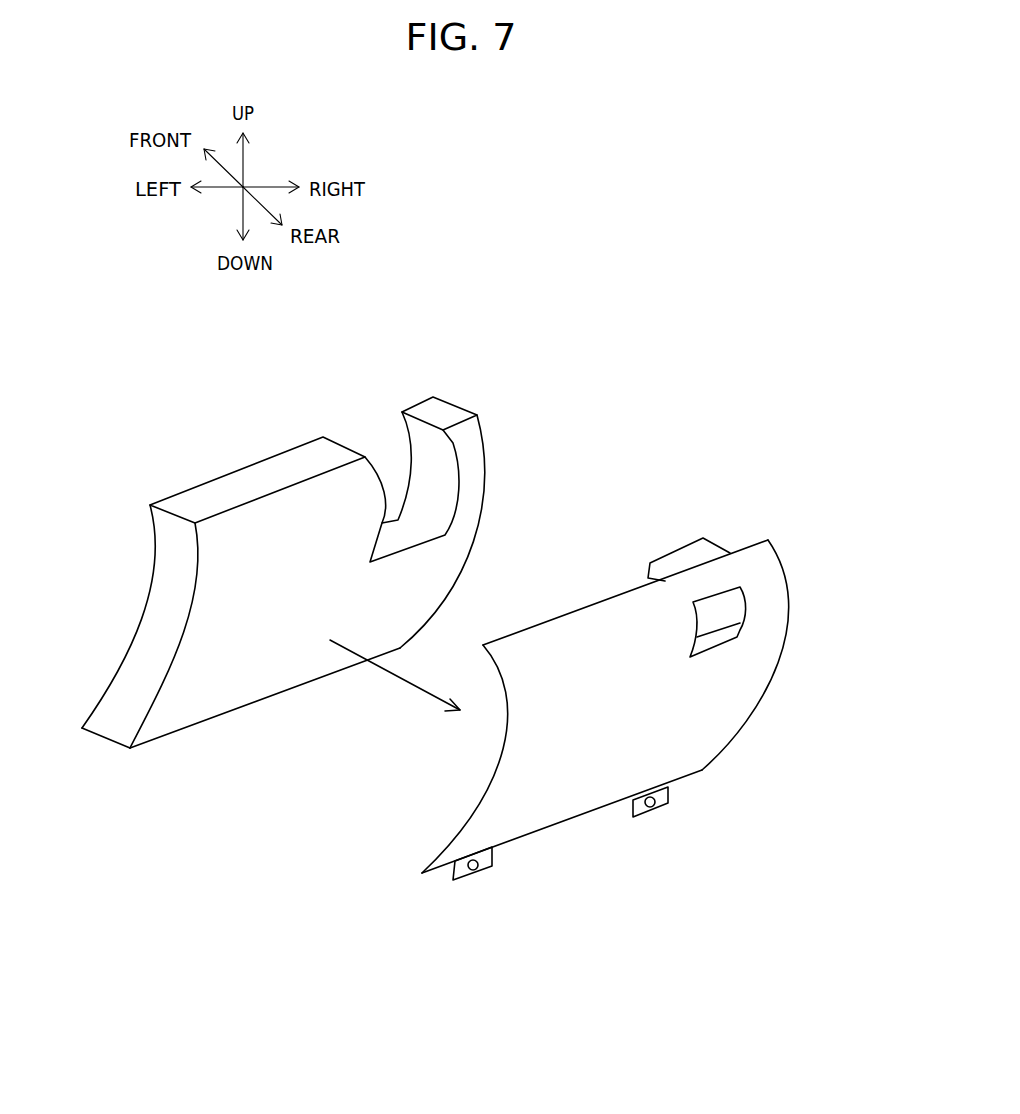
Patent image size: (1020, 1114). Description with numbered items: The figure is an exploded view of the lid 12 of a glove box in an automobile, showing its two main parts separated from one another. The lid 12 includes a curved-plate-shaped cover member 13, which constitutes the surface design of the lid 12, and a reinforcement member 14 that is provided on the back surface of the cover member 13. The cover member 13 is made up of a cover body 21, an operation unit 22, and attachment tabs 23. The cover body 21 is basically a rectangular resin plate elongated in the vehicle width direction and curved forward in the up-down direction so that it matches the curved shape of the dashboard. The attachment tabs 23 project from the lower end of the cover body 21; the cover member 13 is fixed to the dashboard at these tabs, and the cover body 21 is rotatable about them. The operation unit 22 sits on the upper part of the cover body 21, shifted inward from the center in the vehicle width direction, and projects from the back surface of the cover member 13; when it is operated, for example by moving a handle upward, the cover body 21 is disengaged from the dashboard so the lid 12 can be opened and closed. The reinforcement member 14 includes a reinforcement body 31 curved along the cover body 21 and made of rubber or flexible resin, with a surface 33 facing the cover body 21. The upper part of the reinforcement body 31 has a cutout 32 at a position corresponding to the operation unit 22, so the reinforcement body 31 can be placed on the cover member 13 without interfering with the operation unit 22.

The lid 12 is at (522, 262).
The cover member 13 is at (638, 521).
The reinforcement member 14 is at (513, 392).
The cover body 21 is at (455, 830).
The operation unit 22 is at (717, 612).
The attachment tabs 23 is at (473, 881).
The reinforcement body 31 is at (488, 487).
The cutout 32 is at (382, 433).
The surface 33 is at (237, 683).